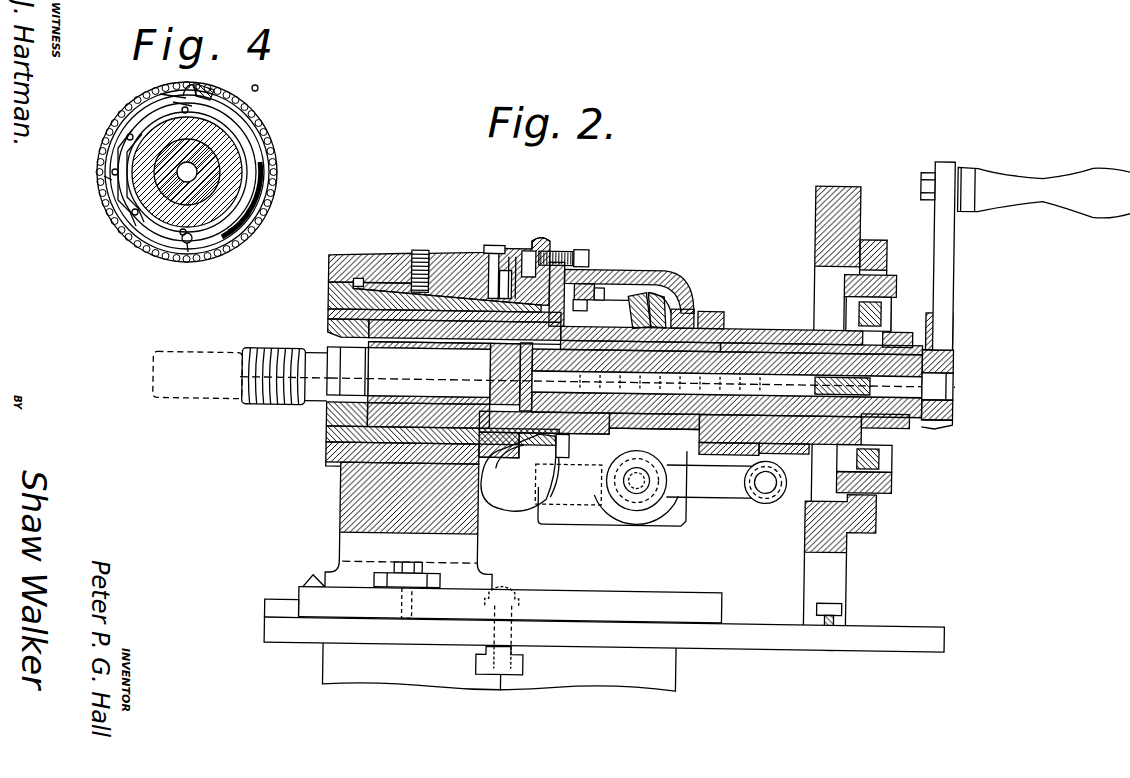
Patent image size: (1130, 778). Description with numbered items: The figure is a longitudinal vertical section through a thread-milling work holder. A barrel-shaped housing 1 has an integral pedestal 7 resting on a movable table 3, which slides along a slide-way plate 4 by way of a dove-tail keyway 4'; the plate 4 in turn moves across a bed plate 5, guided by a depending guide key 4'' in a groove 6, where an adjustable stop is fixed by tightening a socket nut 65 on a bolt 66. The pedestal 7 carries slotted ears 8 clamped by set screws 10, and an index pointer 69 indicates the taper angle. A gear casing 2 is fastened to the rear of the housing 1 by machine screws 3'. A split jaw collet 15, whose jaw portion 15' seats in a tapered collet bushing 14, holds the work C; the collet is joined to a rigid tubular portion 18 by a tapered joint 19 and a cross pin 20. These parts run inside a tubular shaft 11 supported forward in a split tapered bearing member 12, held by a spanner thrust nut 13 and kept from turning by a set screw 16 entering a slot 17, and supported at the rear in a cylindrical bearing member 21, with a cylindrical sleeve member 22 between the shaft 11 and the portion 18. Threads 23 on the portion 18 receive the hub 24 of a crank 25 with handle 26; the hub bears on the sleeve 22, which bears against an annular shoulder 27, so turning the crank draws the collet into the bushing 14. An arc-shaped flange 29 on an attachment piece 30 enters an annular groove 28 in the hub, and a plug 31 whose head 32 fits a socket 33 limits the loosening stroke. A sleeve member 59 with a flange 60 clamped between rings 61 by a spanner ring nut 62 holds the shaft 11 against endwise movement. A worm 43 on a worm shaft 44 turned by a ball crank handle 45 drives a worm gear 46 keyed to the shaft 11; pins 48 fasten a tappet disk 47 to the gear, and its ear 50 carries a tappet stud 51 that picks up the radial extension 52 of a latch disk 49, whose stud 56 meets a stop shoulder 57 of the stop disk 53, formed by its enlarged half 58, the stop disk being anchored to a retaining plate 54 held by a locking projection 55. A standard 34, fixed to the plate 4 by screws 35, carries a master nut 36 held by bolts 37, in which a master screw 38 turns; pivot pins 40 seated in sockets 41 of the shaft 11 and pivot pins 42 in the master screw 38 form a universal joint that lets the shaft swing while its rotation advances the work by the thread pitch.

In FIG. 2, the housing 1 is at (352, 259).
In FIG. 2, the gear casing 2 is at (668, 290).
In FIG. 2, the table 3 is at (490, 594).
In FIG. 2, the machine screws 3' is at (541, 232).
In FIG. 2, the slide-way plate 4 is at (585, 634).
In FIG. 2, the dove-tail slide track 4' is at (263, 607).
In FIG. 2, the guide key 4'' is at (497, 693).
In FIG. 2, the bed plate 5 is at (340, 664).
In FIG. 2, the groove 6 is at (522, 676).
In FIG. 2, the pedestal 7 is at (342, 518).
In FIG. 2, the slotted ears 8 is at (443, 584).
In FIG. 2, the set screws 10 is at (413, 566).
In FIG. 2, the tubular shaft 11 is at (330, 452).
In FIG. 4, the tubular shaft 11 is at (232, 156).
In FIG. 2, the split tapered bearing member 12 is at (330, 306).
In FIG. 4, the split tapered bearing member 12 is at (242, 194).
In FIG. 2, the spanner thrust nut 13 is at (352, 287).
In FIG. 2, the collet bushing 14 is at (330, 318).
In FIG. 2, the split jaw collet 15 is at (391, 373).
In FIG. 2, the split jaw portion 15' is at (429, 373).
In FIG. 2, the set screw 16 is at (413, 272).
In FIG. 2, the slot 17 is at (446, 266).
In FIG. 2, the rigid tubular portion 18 is at (712, 393).
In FIG. 2, the tapered joint means 19 is at (490, 362).
In FIG. 2, the cross pin 20 is at (520, 380).
In FIG. 2, the cylindrical bearing member 21 is at (728, 342).
In FIG. 2, the cylindrical sleeve member 22 is at (712, 310).
In FIG. 2, the external threads 23 is at (738, 446).
In FIG. 2, the hub 24 is at (776, 442).
In FIG. 2, the crank 25 is at (952, 287).
In FIG. 2, the handle 26 is at (1020, 186).
In FIG. 2, the annular shoulder 27 is at (686, 310).
In FIG. 2, the annular groove 28 is at (908, 425).
In FIG. 2, the arc-shaped flange 29 is at (952, 321).
In FIG. 2, the attachment piece 30 is at (898, 328).
In FIG. 2, the plug 31 is at (953, 404).
In FIG. 2, the head 32 is at (953, 346).
In FIG. 2, the socket 33 is at (953, 418).
In FIG. 2, the standard 34 is at (850, 578).
In FIG. 2, the screws 35 is at (846, 610).
In FIG. 2, the master nut 36 is at (878, 521).
In FIG. 2, the bolts 37 is at (815, 382).
In FIG. 2, the master screw 38 is at (893, 483).
In FIG. 2, the pivot pins 40 is at (845, 300).
In FIG. 2, the sockets 41 is at (858, 316).
In FIG. 2, the pivot pins 42 is at (953, 380).
In FIG. 2, the worm 43 is at (626, 504).
In FIG. 2, the worm shaft 44 is at (648, 494).
In FIG. 2, the ball crank handle 45 is at (730, 497).
In FIG. 2, the worm gear 46 is at (678, 276).
In FIG. 4, the worm gear 46 is at (242, 126).
In FIG. 2, the tappet disk 47 is at (637, 296).
In FIG. 4, the tappet disk 47 is at (104, 178).
In FIG. 2, the pins 48 is at (656, 294).
In FIG. 4, the pins 48 is at (112, 172).
In FIG. 2, the latch disk 49 is at (582, 284).
In FIG. 4, the latch disk 49 is at (262, 172).
In FIG. 4, the ear 50 is at (188, 84).
In FIG. 2, the tappet stud 51 is at (584, 300).
In FIG. 4, the tappet stud 51 is at (166, 94).
In FIG. 2, the radial extension 52 is at (600, 288).
In FIG. 4, the radial extension 52 is at (212, 90).
In FIG. 2, the stop disk 53 is at (566, 460).
In FIG. 4, the stop disk 53 is at (242, 226).
In FIG. 2, the retaining plate 54 is at (516, 470).
In FIG. 2, the locking projection 55 is at (526, 254).
In FIG. 2, the stud 56 is at (574, 472).
In FIG. 4, the stud 56 is at (192, 246).
In FIG. 2, the stop shoulder 57 is at (556, 252).
In FIG. 4, the stop shoulder 57 is at (228, 100).
In FIG. 4, the enlarged portion 58 is at (146, 226).
In FIG. 2, the sleeve member 59 is at (491, 292).
In FIG. 2, the annular flange 60 is at (504, 282).
In FIG. 2, the rings 61 is at (507, 270).
In FIG. 2, the spanner ring nut 62 is at (568, 262).
In FIG. 2, the socket nut 65 is at (514, 598).
In FIG. 2, the bolt 66 is at (520, 636).
In FIG. 2, the index pointer 69 is at (318, 582).
In FIG. 2, the work C is at (278, 409).